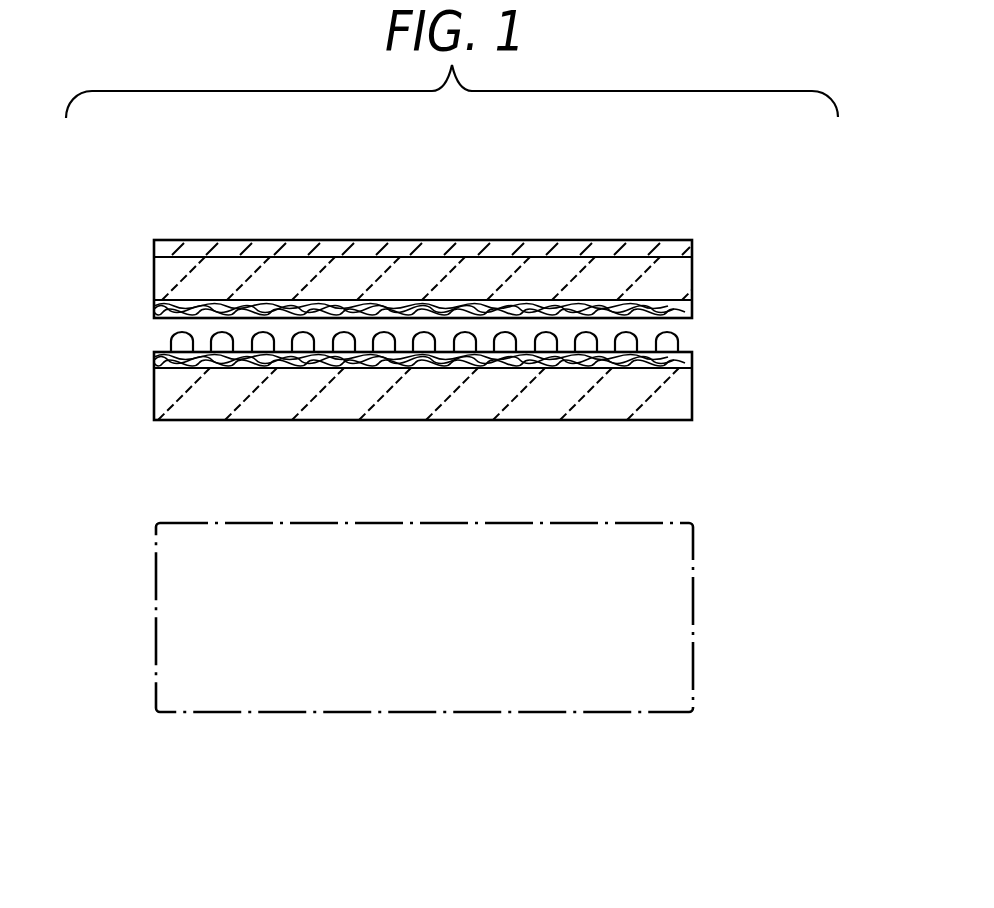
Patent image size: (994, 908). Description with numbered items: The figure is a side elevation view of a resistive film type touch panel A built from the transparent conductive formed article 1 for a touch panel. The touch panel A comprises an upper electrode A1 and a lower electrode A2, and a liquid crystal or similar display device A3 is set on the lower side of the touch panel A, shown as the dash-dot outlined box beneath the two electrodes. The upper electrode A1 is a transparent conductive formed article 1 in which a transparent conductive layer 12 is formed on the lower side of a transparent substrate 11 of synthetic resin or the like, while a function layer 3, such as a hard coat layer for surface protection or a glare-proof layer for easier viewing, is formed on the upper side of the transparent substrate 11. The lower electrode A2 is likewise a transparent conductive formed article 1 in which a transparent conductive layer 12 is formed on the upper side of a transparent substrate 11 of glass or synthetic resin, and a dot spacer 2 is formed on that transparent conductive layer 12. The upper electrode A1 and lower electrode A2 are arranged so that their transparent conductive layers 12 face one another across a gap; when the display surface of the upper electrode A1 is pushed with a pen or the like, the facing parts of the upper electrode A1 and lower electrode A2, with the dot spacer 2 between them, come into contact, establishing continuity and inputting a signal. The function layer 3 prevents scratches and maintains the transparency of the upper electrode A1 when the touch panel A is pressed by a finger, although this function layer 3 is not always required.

The transparent conductive formed article for a touch panel 1 is at (780, 233).
The dot spacer 2 is at (463, 336).
The function layer 3 is at (678, 240).
The transparent substrate 11 is at (682, 262).
The transparent conductive layer 12 is at (682, 310).
The resistive film type touch panel A is at (298, 216).
The upper electrode A1 is at (140, 236).
The lower electrode A2 is at (140, 342).
The display device A3 is at (155, 577).